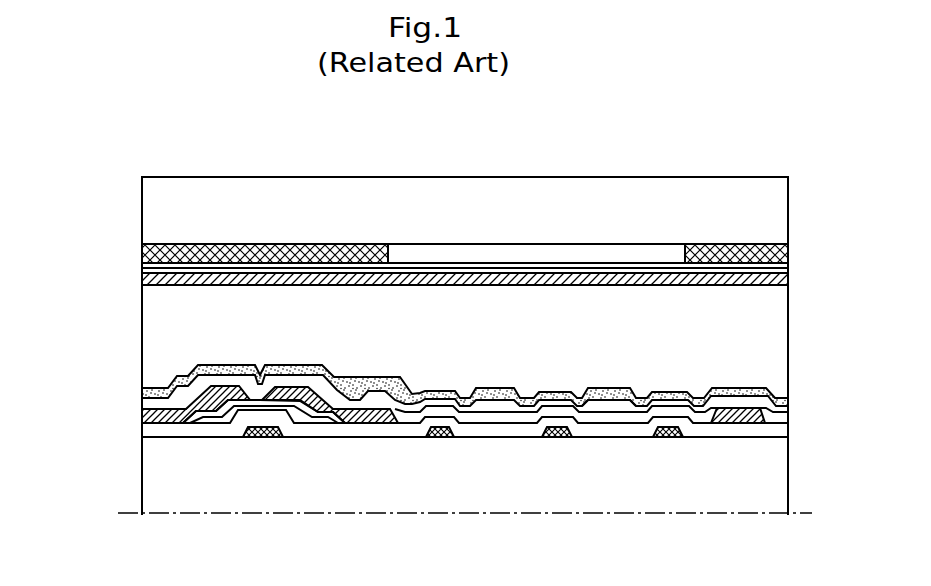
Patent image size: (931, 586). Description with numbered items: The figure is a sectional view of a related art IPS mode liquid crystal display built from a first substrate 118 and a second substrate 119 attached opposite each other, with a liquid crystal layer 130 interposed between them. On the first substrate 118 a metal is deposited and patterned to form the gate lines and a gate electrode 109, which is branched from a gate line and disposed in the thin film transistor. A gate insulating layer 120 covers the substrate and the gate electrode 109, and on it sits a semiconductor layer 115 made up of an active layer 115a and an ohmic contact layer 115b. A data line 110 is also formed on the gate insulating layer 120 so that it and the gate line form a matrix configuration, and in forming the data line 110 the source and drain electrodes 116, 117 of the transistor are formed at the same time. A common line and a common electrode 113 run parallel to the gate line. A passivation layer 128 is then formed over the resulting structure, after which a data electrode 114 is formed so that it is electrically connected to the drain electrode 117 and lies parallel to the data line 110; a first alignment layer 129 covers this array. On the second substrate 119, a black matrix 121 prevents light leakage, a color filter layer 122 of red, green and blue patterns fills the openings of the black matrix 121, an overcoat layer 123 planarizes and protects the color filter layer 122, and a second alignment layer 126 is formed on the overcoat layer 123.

The gate electrode 109 is at (263, 438).
The data line 110 is at (735, 407).
The common electrode 113 is at (546, 428).
The data electrode 114 is at (608, 402).
The semiconductor layer 115 is at (185, 429).
The active layer 115a is at (212, 420).
The ohmic contact layer 115b is at (207, 399).
The source electrode 116 is at (223, 383).
The drain electrode 117 is at (338, 425).
The first substrate 118 is at (778, 470).
The second substrate 119 is at (152, 209).
The gate insulating layer 120 is at (788, 432).
The black matrix 121 is at (150, 254).
The color filter layer 122 is at (502, 256).
The overcoat layer 123 is at (150, 268).
The second alignment layer 126 is at (788, 277).
The passivation layer 128 is at (788, 412).
The first alignment layer 129 is at (480, 392).
The liquid crystal layer 130 is at (778, 320).